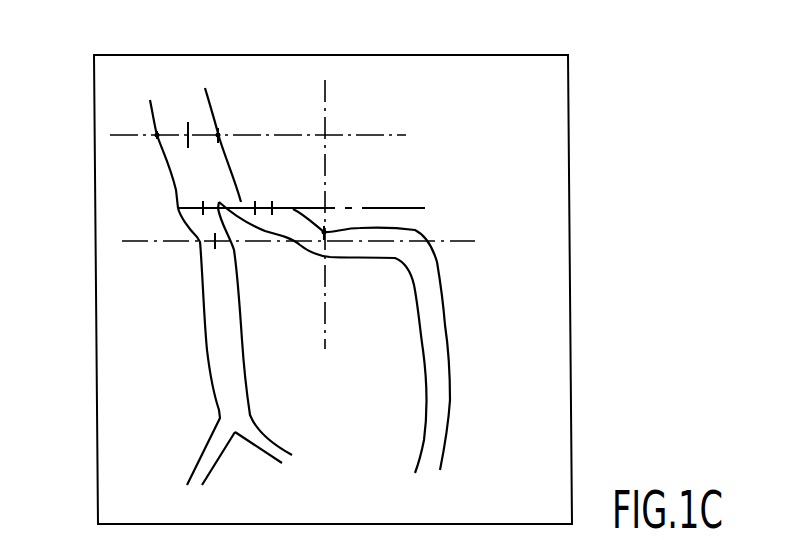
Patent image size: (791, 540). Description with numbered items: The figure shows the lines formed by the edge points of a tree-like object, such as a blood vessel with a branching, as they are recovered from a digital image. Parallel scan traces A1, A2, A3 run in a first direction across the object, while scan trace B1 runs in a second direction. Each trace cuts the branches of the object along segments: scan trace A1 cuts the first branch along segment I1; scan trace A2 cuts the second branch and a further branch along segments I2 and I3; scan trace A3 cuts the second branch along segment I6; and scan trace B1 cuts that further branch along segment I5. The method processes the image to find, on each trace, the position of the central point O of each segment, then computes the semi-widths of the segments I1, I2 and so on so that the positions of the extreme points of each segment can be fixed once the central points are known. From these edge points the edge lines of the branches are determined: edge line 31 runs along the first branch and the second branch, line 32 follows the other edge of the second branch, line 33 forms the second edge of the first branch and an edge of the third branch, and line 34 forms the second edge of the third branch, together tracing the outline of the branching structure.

The segment I1 is at (178, 125).
The segment I2 is at (189, 207).
The segment I3 is at (240, 207).
The segment I5 is at (326, 232).
The segment I6 is at (214, 249).
The central point O is at (190, 122).
The scan trace A1 is at (418, 135).
The scan trace A2 is at (437, 208).
The scan trace A3 is at (487, 241).
The scan trace B1 is at (325, 370).
The edge line 31 is at (200, 347).
The edge line 32 is at (238, 380).
The edge line 33 is at (444, 300).
The edge line 34 is at (422, 352).